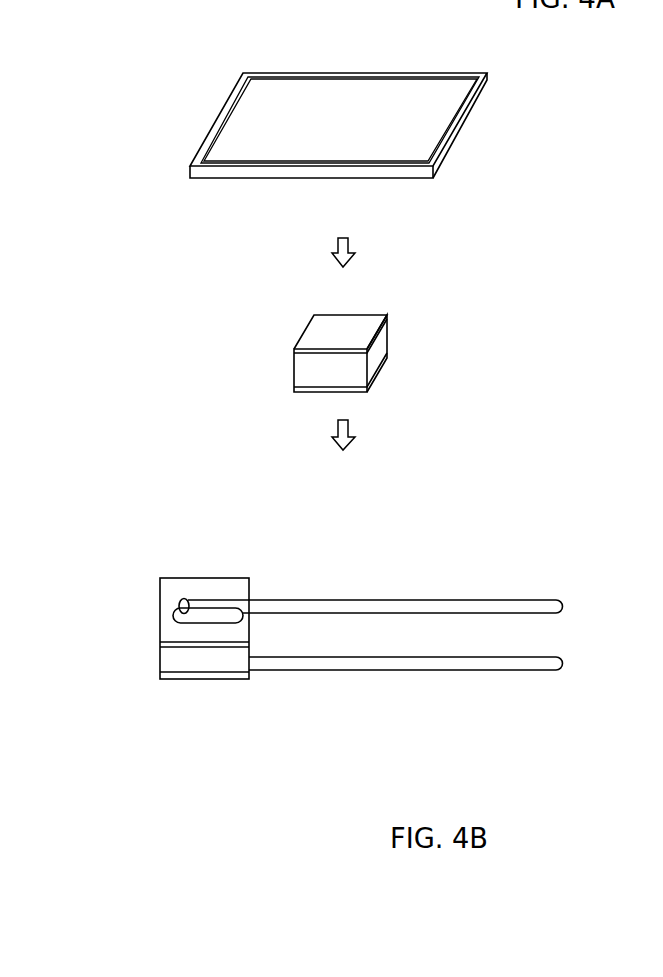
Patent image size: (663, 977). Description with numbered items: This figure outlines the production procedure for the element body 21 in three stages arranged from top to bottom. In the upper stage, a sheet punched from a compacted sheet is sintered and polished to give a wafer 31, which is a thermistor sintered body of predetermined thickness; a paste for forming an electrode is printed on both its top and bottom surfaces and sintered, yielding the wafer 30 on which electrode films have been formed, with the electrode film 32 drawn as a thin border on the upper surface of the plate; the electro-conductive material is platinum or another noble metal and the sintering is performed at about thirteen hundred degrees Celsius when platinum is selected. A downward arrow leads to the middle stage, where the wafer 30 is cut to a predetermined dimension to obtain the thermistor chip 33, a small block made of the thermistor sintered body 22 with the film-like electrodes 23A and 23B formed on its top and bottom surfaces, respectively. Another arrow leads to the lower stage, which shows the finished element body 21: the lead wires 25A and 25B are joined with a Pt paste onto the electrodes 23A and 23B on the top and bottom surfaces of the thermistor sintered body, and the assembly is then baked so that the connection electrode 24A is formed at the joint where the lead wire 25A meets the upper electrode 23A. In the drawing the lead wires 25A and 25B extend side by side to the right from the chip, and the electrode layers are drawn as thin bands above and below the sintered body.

In FIG. 4A, the wafer 30 is at (338, 118).
In FIG. 4A, the wafer 31 is at (280, 179).
In FIG. 4A, the thermistor layer 32 is at (245, 110).
In FIG. 4A, the thermistor chip 33 is at (309, 344).
In FIG. 4A, the thermistor element body 22 is at (302, 380).
In FIG. 4B, the thermistor element body 22 is at (160, 662).
In FIG. 4A, the electrode 23A is at (303, 332).
In FIG. 4B, the electrode 23A is at (160, 643).
In FIG. 4A, the electrode 23B is at (358, 393).
In FIG. 4B, the electrode 23B is at (160, 677).
In FIG. 4B, the element body 21 is at (312, 612).
In FIG. 4B, the connection electrode 24A is at (180, 612).
In FIG. 4B, the lead wire 25A is at (346, 580).
In FIG. 4B, the lead wire 25B is at (490, 670).